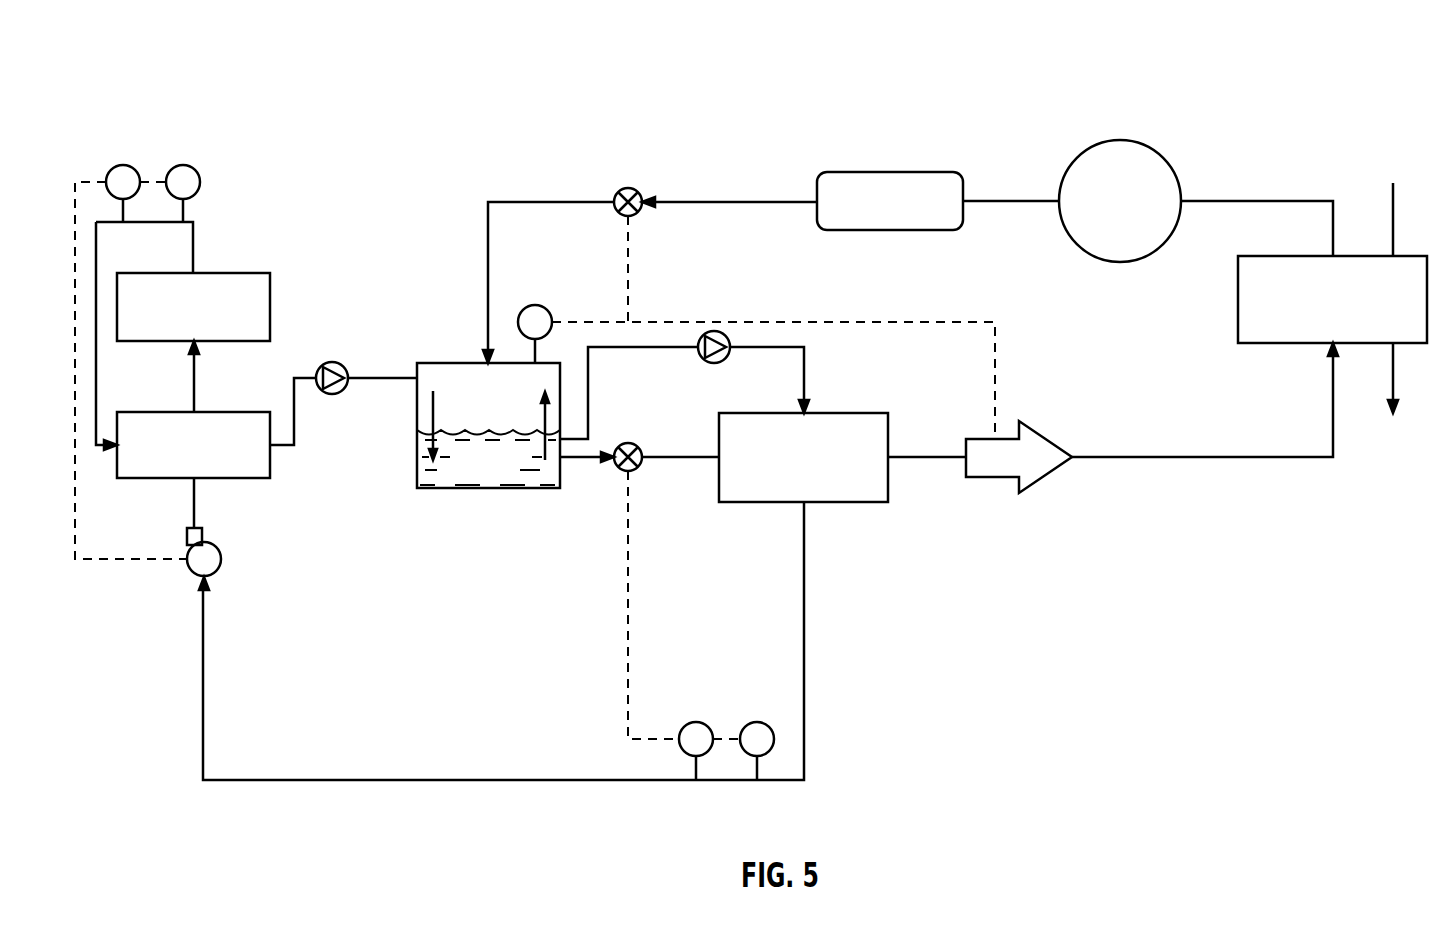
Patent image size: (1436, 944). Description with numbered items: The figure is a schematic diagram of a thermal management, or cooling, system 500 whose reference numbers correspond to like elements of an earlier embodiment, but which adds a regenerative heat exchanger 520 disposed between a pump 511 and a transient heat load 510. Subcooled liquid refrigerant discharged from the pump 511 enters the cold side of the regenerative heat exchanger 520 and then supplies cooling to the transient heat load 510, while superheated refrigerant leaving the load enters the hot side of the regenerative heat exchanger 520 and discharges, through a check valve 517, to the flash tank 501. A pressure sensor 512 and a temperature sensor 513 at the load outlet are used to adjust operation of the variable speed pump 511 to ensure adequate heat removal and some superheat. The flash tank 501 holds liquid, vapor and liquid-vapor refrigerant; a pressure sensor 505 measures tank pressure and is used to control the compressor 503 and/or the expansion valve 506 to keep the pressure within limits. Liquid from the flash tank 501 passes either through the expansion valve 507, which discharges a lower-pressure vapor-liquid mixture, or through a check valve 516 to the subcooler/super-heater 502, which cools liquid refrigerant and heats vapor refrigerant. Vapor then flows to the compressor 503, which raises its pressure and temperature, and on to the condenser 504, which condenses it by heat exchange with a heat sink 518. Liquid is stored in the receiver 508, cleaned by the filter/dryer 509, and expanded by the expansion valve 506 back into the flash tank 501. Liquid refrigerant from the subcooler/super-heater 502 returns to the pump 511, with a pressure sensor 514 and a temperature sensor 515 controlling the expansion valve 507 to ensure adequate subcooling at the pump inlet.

The thermal management system 500 is at (196, 36).
The flash tank 501 is at (442, 490).
The subcooler/super-heater 502 is at (843, 413).
The compressor 503 is at (993, 477).
The condenser 504 is at (1268, 256).
The pressure sensor 505 is at (540, 305).
The expansion valve (EV-1) 506 is at (635, 215).
The expansion valve (EV-2) 507 is at (634, 470).
The receiver 508 is at (1118, 141).
The filter/dryer 509 is at (840, 172).
The transient heat load 510 is at (245, 273).
The pump 511 is at (212, 575).
The pressure sensor 512 is at (122, 165).
The temperature sensor 513 is at (182, 165).
The pressure sensor 514 is at (694, 722).
The temperature sensor 515 is at (755, 722).
The check valve 516 is at (716, 363).
The check valve 517 is at (330, 362).
The heat sink 518 is at (1391, 197).
The regenerative heat exchanger 520 is at (245, 480).